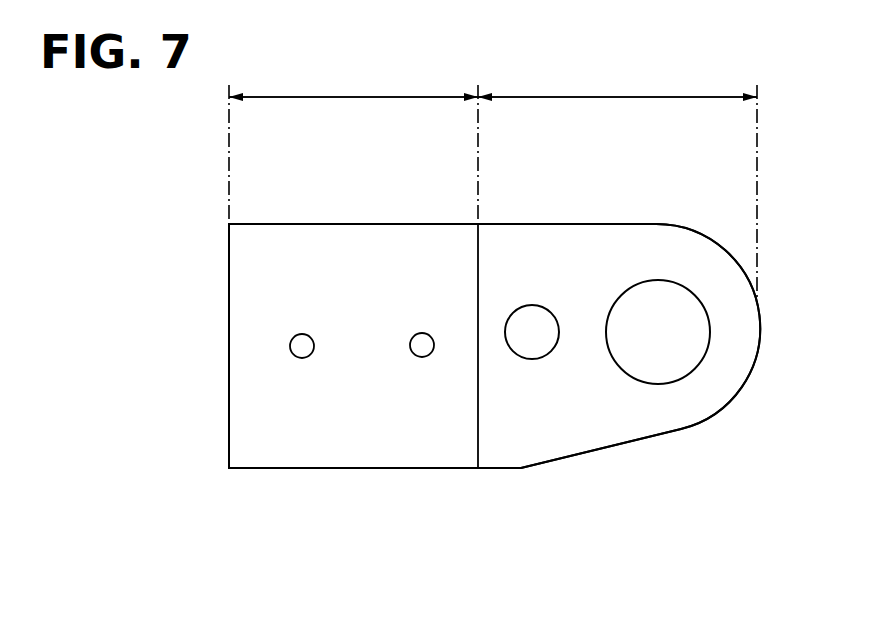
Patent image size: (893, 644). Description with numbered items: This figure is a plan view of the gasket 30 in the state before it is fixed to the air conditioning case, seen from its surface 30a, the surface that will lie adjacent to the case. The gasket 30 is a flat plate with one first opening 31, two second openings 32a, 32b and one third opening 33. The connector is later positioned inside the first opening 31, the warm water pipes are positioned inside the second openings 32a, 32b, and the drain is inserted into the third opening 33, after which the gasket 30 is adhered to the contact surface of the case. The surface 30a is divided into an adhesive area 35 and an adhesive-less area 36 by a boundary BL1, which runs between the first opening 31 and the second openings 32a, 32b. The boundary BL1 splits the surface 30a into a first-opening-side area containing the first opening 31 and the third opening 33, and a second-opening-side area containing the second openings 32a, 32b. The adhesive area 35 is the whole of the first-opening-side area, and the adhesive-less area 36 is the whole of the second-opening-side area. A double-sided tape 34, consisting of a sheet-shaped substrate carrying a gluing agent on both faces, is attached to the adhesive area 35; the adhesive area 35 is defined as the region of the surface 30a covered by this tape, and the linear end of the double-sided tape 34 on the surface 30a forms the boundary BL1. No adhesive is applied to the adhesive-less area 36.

The gasket 30 is at (229, 263).
The surface 30a is at (402, 250).
The first opening 31 is at (690, 355).
The second opening 32a is at (424, 356).
The second opening 32b is at (304, 357).
The third opening 33 is at (540, 353).
The double-sided tape 34 is at (598, 255).
The adhesive area 35 is at (624, 97).
The adhesive-less area 36 is at (355, 97).
The boundary BL1 is at (478, 442).